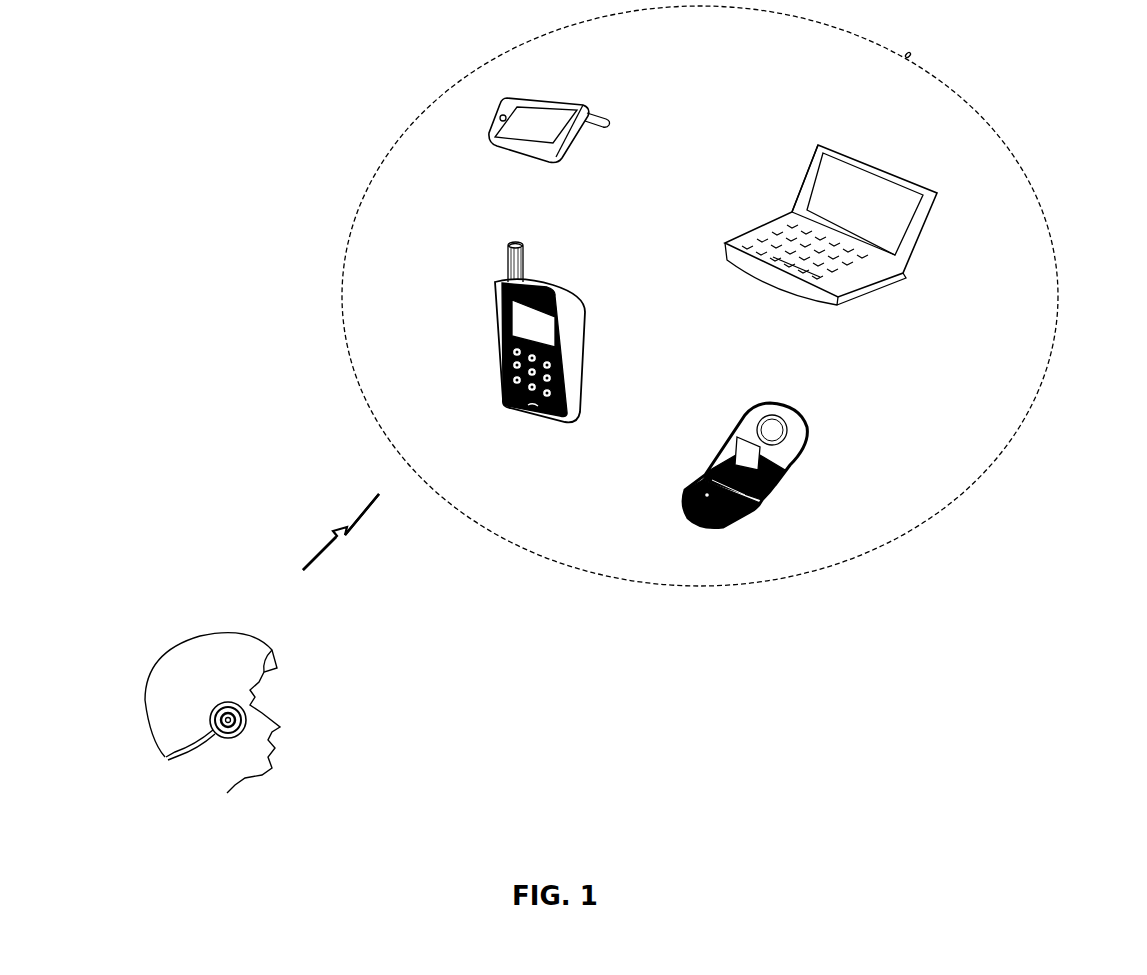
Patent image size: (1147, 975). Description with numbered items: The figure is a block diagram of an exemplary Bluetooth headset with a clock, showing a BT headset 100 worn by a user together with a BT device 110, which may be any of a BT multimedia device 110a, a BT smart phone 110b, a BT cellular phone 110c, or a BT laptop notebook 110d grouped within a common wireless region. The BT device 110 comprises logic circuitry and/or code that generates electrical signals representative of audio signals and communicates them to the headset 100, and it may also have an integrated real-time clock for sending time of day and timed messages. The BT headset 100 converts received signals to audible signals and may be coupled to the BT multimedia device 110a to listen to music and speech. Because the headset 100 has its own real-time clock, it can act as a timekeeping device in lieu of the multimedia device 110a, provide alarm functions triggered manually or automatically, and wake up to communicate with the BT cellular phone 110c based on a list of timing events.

The BT headset 100 is at (223, 700).
The BT device 110 is at (997, 125).
The BT multimedia device 110a is at (577, 102).
The BT smart phone 110b is at (575, 320).
The BT cellular phone 110c is at (807, 450).
The BT laptop notebook 110d is at (837, 147).